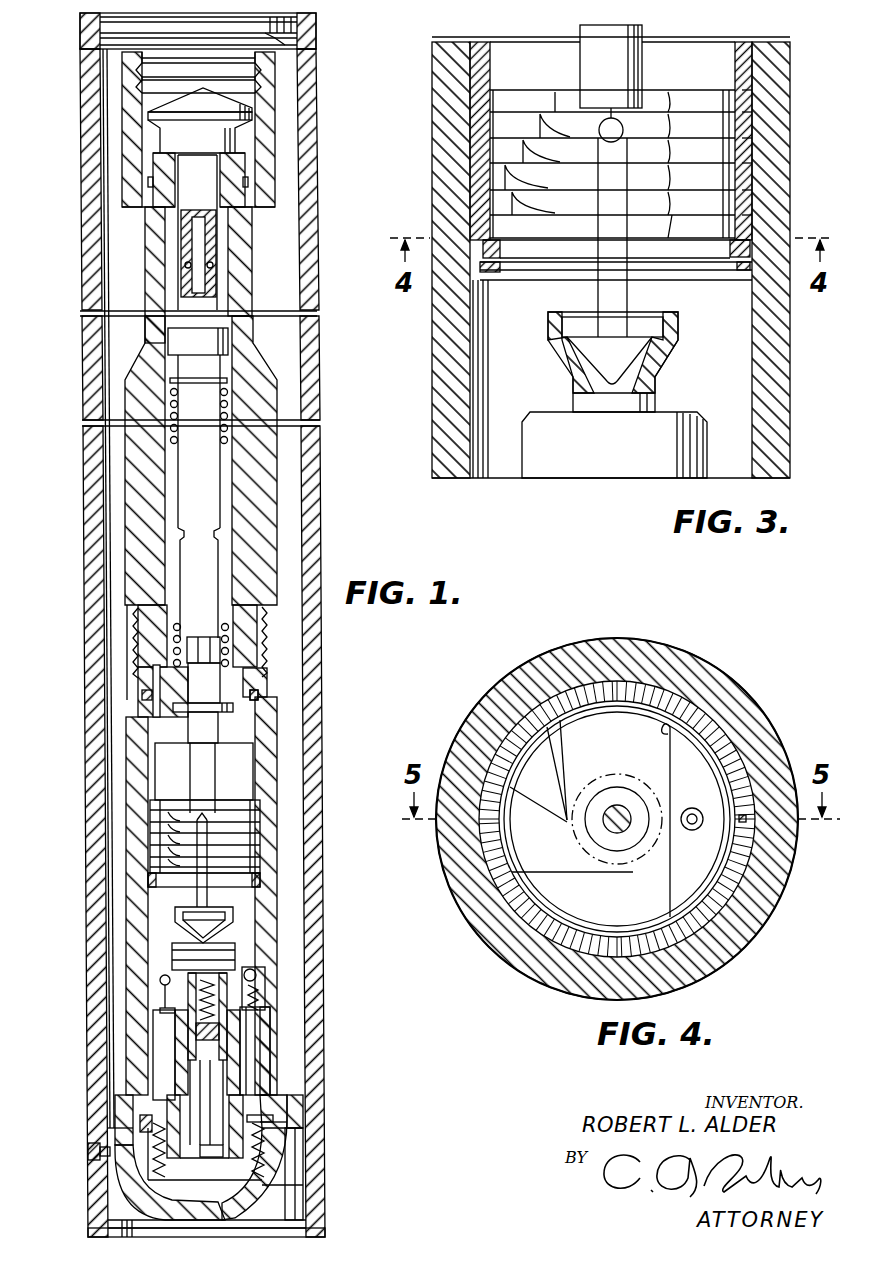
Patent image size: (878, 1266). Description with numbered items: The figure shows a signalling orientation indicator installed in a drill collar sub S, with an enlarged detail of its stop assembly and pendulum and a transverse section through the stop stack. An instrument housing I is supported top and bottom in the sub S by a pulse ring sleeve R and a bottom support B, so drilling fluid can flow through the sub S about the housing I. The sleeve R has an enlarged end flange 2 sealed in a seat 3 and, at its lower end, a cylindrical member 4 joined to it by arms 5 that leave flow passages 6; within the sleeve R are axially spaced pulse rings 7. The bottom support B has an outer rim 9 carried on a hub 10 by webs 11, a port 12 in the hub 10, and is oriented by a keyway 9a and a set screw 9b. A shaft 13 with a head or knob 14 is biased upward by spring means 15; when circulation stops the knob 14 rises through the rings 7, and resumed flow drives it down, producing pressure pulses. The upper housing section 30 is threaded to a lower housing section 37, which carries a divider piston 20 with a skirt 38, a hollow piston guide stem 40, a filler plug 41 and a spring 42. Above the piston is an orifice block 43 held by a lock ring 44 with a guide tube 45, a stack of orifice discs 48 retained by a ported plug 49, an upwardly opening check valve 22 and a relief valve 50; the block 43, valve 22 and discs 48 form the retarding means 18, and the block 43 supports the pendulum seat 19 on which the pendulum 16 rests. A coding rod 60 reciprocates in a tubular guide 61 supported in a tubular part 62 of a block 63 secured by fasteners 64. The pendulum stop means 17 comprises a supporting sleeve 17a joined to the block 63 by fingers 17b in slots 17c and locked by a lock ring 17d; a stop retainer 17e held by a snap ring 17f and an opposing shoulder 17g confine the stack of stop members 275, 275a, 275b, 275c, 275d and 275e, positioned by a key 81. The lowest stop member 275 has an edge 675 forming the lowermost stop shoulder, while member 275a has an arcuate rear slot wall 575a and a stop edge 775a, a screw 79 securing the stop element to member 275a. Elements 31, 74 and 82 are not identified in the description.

In FIG. 1, the enlarged end flange 2 is at (86, 17).
In FIG. 1, the seat 3 is at (285, 15).
In FIG. 1, the pulse rings 7 is at (126, 62).
In FIG. 1, the pulse ring sleeve R is at (286, 70).
In FIG. 1, the head or knob 14 is at (246, 106).
In FIG. 1, the arms 5 is at (132, 156).
In FIG. 1, the windows or flow passages 6 is at (254, 143).
In FIG. 1, the packing 31 is at (242, 165).
In FIG. 1, the cylindrical member 4 is at (128, 194).
In FIG. 1, the shaft 13 is at (210, 192).
In FIG. 1, the coding rod 60 is at (194, 236).
In FIG. 1, the upper housing section 30 is at (248, 242).
In FIG. 1, the tubular guide and stop ball support 61 is at (190, 280).
In FIG. 1, the piston head 82 is at (226, 380).
In FIG. 1, the spring means 15 is at (229, 396).
In FIG. 1, the key 81 is at (216, 463).
In FIG. 3, the key 81 is at (736, 79).
In FIG. 1, the drill collar sub S is at (314, 490).
In FIG. 1, the tubular part 62 is at (216, 553).
In FIG. 1, the spring 74 is at (198, 636).
In FIG. 1, the instrument housing I is at (283, 630).
In FIG. 1, the fasteners 64 is at (150, 690).
In FIG. 1, the block 63 is at (232, 688).
In FIG. 1, the lock ring 17d is at (250, 703).
In FIG. 1, the upstanding fingers 17b is at (262, 708).
In FIG. 1, the slots 17c is at (257, 716).
In FIG. 1, the supporting sleeve 17a is at (258, 766).
In FIG. 1, the lower housing section 37 is at (278, 806).
In FIG. 3, the lower housing section 37 is at (442, 362).
In FIG. 1, the pendulum stop means 17 is at (160, 830).
In FIG. 3, the pendulum stop means 17 is at (482, 155).
In FIG. 1, the stop retainer 17e is at (258, 876).
In FIG. 3, the stop retainer 17e is at (728, 254).
In FIG. 1, the pendulum 16 is at (196, 900).
In FIG. 3, the pendulum 16 is at (600, 290).
In FIG. 1, the snap ring 17f is at (257, 884).
In FIG. 3, the snap ring 17f is at (738, 268).
In FIG. 1, the pendulum seat 19 is at (226, 918).
In FIG. 3, the pendulum seat 19 is at (549, 338).
In FIG. 1, the orifice block 43 is at (162, 970).
In FIG. 1, the retarding means 18 is at (238, 962).
In FIG. 1, the check valve 22 is at (160, 980).
In FIG. 1, the relief valve 50 is at (264, 980).
In FIG. 1, the orifice discs 48 is at (192, 1005).
In FIG. 1, the lock ring 44 is at (244, 1007).
In FIG. 1, the guide tube 45 is at (244, 1034).
In FIG. 1, the ported plug 49 is at (198, 1035).
In FIG. 1, the divider piston 20 is at (250, 1092).
In FIG. 1, the hollow piston guide stem 40 is at (180, 1086).
In FIG. 1, the spring 42 is at (264, 1122).
In FIG. 1, the skirt 38 is at (124, 1116).
In FIG. 1, the bottom support B is at (307, 1125).
In FIG. 1, the set screw 9b is at (90, 1150).
In FIG. 1, the webs 11 is at (296, 1158).
In FIG. 1, the outer rim 9 is at (300, 1170).
In FIG. 1, the filler plug 41 is at (155, 1165).
In FIG. 1, the hub 10 is at (250, 1212).
In FIG. 1, the keyway 9a is at (122, 1195).
In FIG. 1, the port 12 is at (232, 1226).
In FIG. 3, the opposing shoulder 17g is at (505, 90).
In FIG. 3, the upper stop member 275e is at (740, 92).
In FIG. 4, the upper stop member 275e is at (548, 734).
In FIG. 3, the stop shoulder 275d is at (740, 114).
In FIG. 4, the stop shoulder 275d is at (542, 760).
In FIG. 3, the stop shoulder 275c is at (740, 140).
In FIG. 4, the stop shoulder 275c is at (535, 788).
In FIG. 3, the stop shoulder 275b is at (740, 165).
In FIG. 4, the stop shoulder 275b is at (523, 847).
In FIG. 3, the stop member 275a is at (740, 192).
In FIG. 4, the stop member 275a is at (590, 913).
In FIG. 3, the stop member 275 is at (740, 216).
In FIG. 4, the stop member 275 is at (688, 748).
In FIG. 4, the edge 675 is at (664, 727).
In FIG. 4, the arcuate rear slot wall 575a is at (630, 867).
In FIG. 4, the stop shoulder or edge 775a is at (543, 867).
In FIG. 4, the screw 79 is at (692, 830).